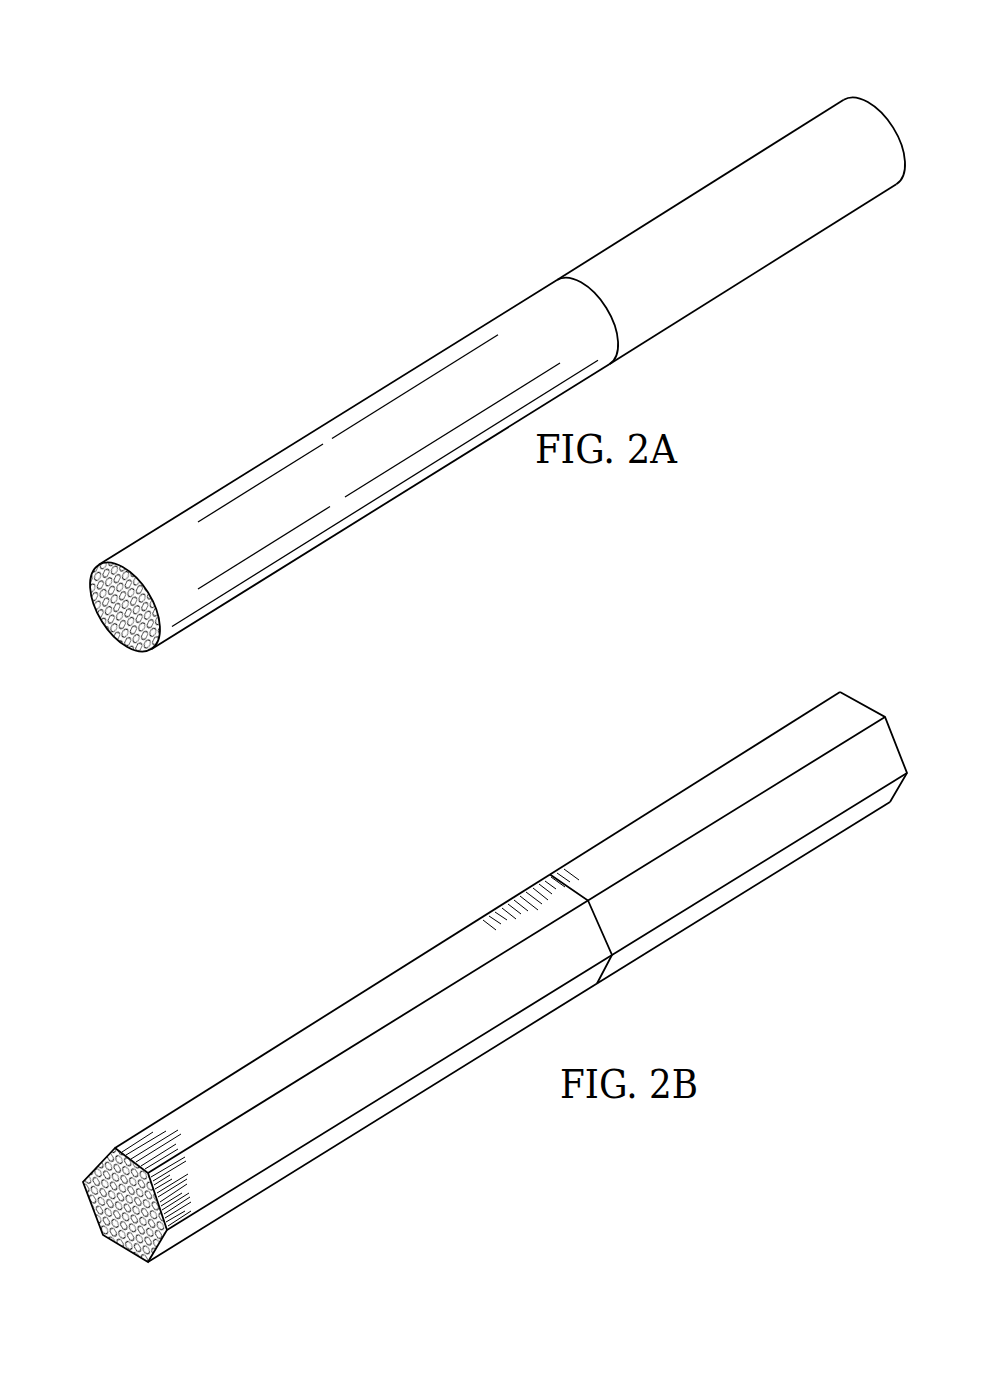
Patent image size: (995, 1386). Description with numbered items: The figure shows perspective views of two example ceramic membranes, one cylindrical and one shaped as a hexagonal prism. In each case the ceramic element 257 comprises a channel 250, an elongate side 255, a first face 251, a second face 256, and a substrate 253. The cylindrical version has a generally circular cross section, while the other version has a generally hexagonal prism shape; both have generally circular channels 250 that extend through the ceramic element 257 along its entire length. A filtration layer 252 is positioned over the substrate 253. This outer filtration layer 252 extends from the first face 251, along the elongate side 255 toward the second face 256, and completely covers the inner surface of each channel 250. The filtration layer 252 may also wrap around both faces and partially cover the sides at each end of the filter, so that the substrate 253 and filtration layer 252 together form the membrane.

In FIG. 2A, the porous rod 250 is at (92, 593).
In FIG. 2B, the porous rod 250 is at (92, 1204).
In FIG. 2A, the end face with pores 251 is at (122, 647).
In FIG. 2B, the end face with pores 251 is at (123, 1252).
In FIG. 2A, the first (uncoated) portion 252 is at (327, 433).
In FIG. 2B, the first (uncoated) portion 252 is at (327, 1018).
In FIG. 2A, the second (coated) portion 253 is at (693, 203).
In FIG. 2B, the second (coated) portion 253 is at (693, 790).
In FIG. 2A, the boundary between portions 255 is at (557, 280).
In FIG. 2B, the boundary between portions 255 is at (553, 874).
In FIG. 2A, the distal end 256 is at (870, 98).
In FIG. 2B, the distal end 256 is at (867, 704).
In FIG. 2A, the outer surface 257 is at (490, 305).
In FIG. 2B, the outer surface 257 is at (518, 867).